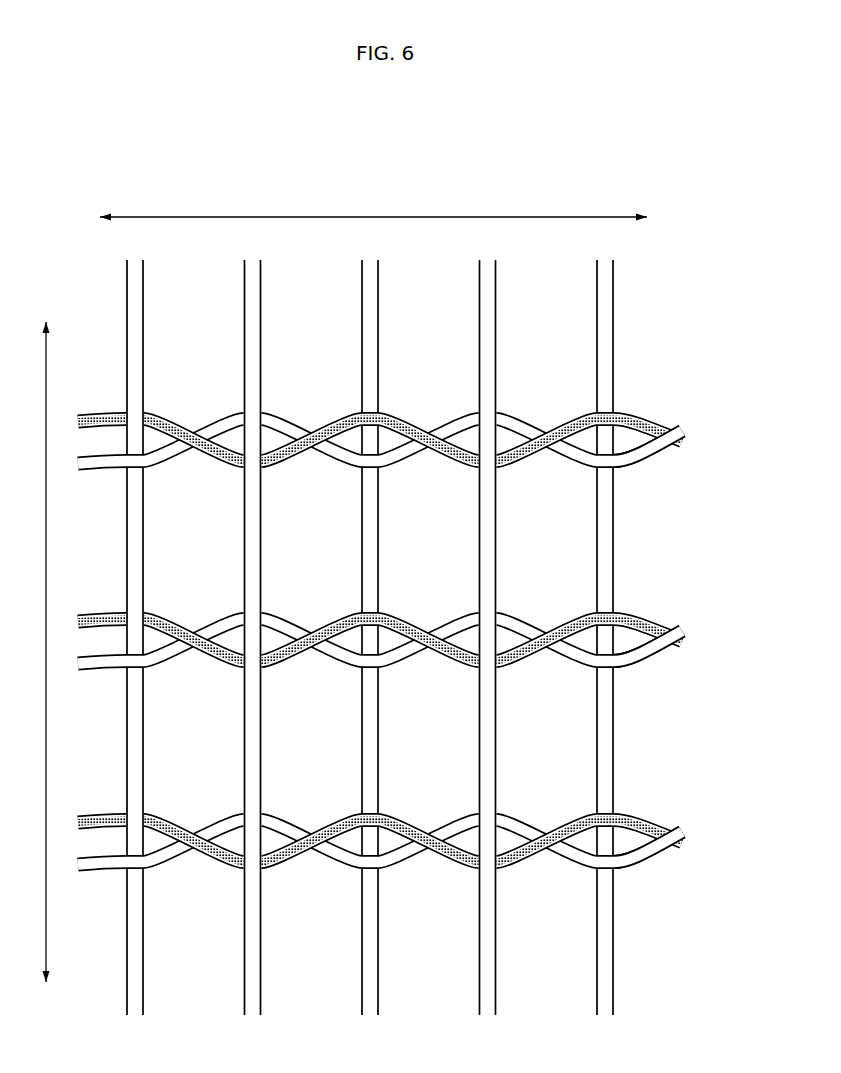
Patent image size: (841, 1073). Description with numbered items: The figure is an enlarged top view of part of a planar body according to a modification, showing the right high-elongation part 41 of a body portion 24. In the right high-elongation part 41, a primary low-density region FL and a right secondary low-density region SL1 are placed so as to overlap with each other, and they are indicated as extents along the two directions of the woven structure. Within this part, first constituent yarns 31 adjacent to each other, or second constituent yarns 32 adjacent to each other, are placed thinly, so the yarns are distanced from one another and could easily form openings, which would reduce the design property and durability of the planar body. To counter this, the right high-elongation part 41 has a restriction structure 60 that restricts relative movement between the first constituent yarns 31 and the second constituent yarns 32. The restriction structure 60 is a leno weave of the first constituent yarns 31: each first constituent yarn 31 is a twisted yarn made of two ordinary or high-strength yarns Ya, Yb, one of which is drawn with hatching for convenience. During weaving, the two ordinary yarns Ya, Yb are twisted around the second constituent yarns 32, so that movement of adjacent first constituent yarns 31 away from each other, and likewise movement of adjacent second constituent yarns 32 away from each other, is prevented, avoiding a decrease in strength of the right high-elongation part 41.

The second constituent yarn 32 is at (143, 298).
The ordinary yarn Ya is at (638, 421).
The ordinary yarn Yb is at (638, 449).
The first constituent yarn 31 is at (444, 640).
The restriction structure 60 is at (444, 640).
The right high-elongation part 41 is at (444, 613).
The body portion 24 is at (444, 613).
The right secondary low-density region SL1 is at (373, 208).
The primary low-density region FL is at (32, 652).